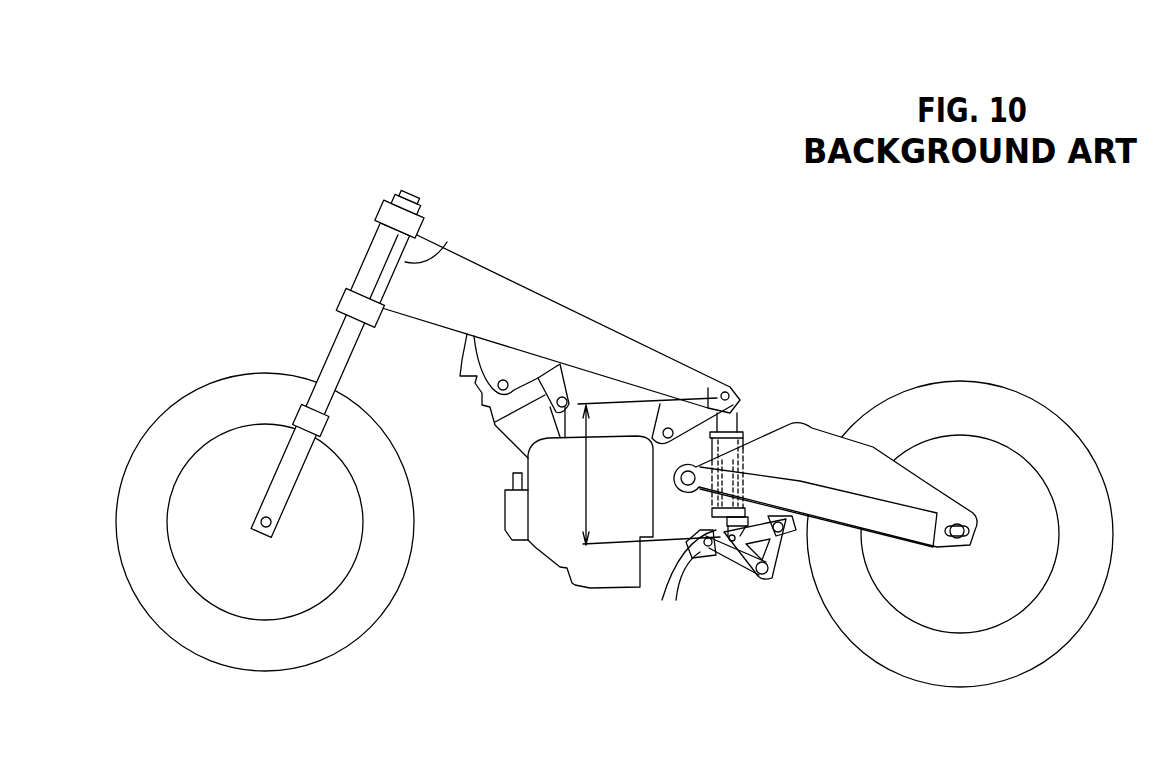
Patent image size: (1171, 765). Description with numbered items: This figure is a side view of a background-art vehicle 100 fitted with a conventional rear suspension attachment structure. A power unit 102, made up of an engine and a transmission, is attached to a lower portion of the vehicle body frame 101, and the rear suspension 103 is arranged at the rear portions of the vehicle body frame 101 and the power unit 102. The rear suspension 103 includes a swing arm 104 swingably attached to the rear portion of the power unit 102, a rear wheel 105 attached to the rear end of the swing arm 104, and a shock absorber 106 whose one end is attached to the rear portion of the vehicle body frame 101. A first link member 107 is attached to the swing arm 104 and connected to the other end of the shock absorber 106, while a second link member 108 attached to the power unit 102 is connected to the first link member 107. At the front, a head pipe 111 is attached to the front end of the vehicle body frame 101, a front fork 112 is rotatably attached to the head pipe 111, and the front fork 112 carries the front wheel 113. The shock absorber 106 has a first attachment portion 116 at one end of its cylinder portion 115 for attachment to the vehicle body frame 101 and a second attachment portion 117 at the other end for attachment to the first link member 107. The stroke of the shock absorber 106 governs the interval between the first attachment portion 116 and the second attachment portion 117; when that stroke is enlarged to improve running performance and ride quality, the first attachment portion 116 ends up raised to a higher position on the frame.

The vehicle 100 is at (266, 190).
The vehicle body frame 101 is at (513, 283).
The power unit 102 is at (588, 587).
The rear suspension 103 is at (817, 415).
The swing arm 104 is at (893, 452).
The rear wheel 105 is at (1050, 410).
The shock absorber 106 is at (742, 425).
The first link member 107 is at (775, 553).
The second link member 108 is at (727, 553).
The head pipe 111 is at (440, 245).
The front fork 112 is at (330, 347).
The front wheel 113 is at (180, 398).
The cylinder portion 115 is at (745, 435).
The first attachment portion 116 is at (746, 414).
The second attachment portion 117 is at (688, 540).